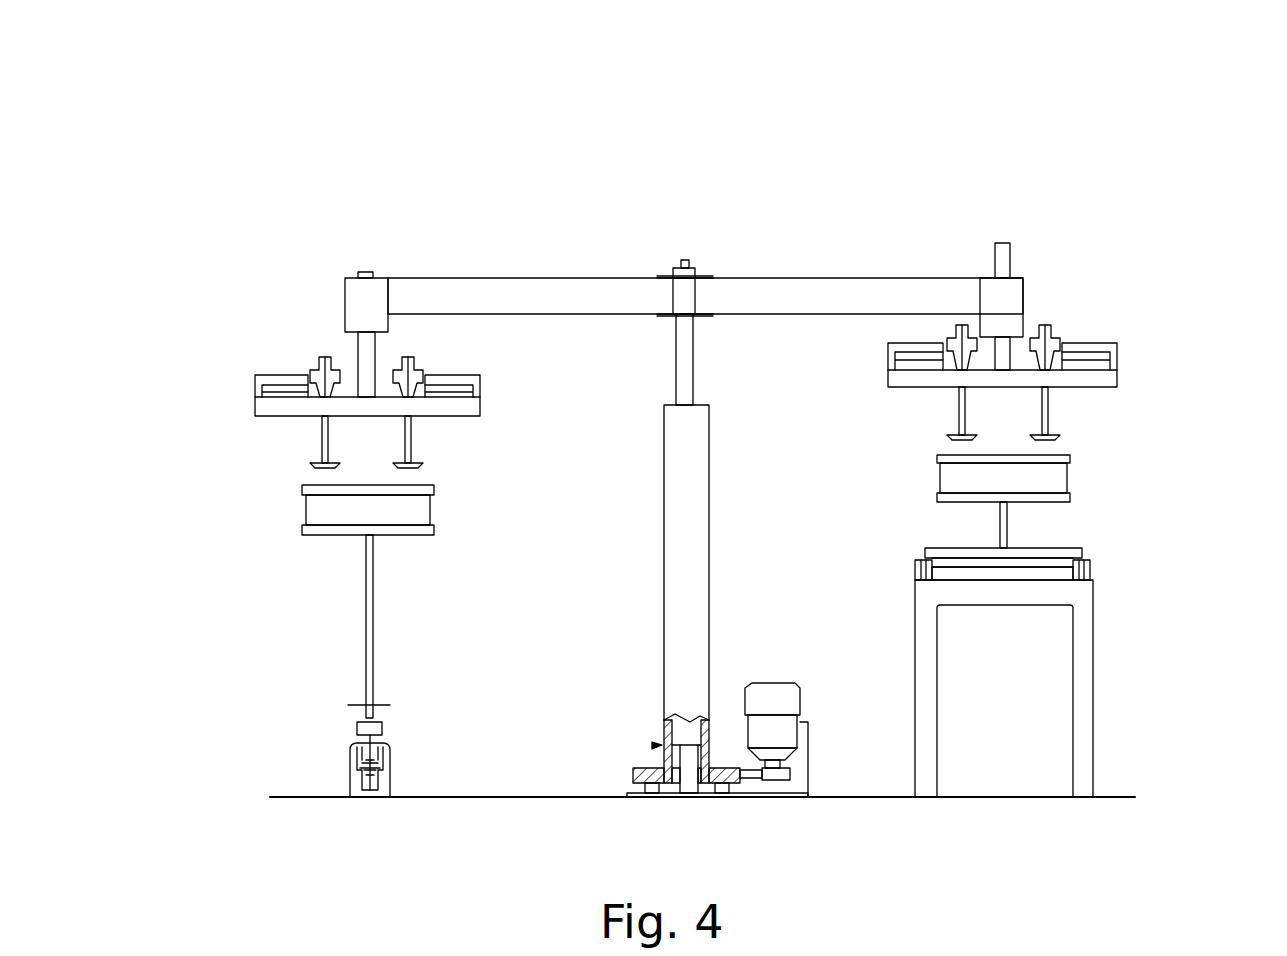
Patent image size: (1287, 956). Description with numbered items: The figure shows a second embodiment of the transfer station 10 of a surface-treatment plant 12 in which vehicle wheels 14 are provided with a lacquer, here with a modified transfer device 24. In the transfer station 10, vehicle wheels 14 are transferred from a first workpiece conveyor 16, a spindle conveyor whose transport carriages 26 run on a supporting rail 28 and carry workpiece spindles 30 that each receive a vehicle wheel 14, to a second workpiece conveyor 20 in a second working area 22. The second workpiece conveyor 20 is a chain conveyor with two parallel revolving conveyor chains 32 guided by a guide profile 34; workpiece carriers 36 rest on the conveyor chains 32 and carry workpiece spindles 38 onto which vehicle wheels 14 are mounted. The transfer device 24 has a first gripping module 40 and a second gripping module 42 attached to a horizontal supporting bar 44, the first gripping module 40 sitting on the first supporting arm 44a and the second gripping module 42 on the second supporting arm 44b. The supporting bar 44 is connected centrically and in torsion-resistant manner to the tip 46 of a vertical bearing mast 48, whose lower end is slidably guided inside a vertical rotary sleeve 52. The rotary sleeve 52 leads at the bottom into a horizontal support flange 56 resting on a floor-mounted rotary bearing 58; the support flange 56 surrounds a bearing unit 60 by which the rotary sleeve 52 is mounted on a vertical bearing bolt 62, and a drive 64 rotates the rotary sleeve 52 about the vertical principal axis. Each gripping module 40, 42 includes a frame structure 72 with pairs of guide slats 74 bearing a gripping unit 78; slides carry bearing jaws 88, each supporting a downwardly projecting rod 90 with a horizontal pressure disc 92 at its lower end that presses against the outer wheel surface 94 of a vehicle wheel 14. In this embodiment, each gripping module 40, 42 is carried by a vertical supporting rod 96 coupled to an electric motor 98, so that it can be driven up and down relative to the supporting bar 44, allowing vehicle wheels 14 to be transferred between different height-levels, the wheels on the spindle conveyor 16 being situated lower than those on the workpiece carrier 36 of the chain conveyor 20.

The transfer station 10 is at (987, 131).
The surface-treatment plant 12 is at (136, 140).
The vehicle wheel 14 is at (668, 497).
The first workpiece conveyor 16 is at (347, 782).
The second workpiece conveyor 20 is at (1100, 575).
The second working area 22 is at (1152, 650).
The transfer device 24 is at (657, 257).
The transport carriage 26 is at (392, 731).
The supporting rail 28 is at (385, 790).
The workpiece spindle 30 is at (375, 630).
The conveyor chain 32 is at (920, 548).
The guide profile 34 is at (918, 575).
The workpiece carrier 36 is at (935, 540).
The workpiece spindle 38 is at (1003, 527).
The first gripping module 40 is at (382, 421).
The second gripping module 42 is at (1003, 265).
The supporting bar 44 is at (612, 277).
The first supporting arm 44a is at (490, 298).
The second supporting arm 44b is at (898, 298).
The tip of the bearing mast 46 is at (693, 297).
The bearing mast 48 is at (693, 348).
The rotary sleeve 52 is at (710, 630).
The support flange 56 is at (634, 778).
The rotary bearing 58 is at (650, 800).
The bearing unit 60 is at (655, 745).
The bearing bolt 62 is at (688, 783).
The drive 64 is at (780, 690).
The frame structure 72 is at (490, 405).
The pair of guide slats 74 is at (455, 380).
The first gripping unit 78 is at (318, 338).
The bearing jaw 88 is at (318, 370).
The rod 90 is at (325, 440).
The pressure disc 92 is at (318, 467).
The outer wheel surface 94 is at (306, 510).
The supporting rod 96 is at (350, 355).
The electric motor 98 is at (370, 302).